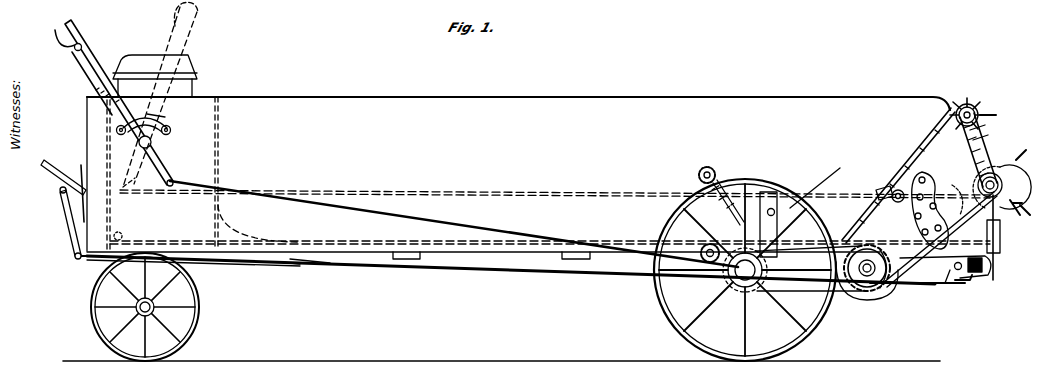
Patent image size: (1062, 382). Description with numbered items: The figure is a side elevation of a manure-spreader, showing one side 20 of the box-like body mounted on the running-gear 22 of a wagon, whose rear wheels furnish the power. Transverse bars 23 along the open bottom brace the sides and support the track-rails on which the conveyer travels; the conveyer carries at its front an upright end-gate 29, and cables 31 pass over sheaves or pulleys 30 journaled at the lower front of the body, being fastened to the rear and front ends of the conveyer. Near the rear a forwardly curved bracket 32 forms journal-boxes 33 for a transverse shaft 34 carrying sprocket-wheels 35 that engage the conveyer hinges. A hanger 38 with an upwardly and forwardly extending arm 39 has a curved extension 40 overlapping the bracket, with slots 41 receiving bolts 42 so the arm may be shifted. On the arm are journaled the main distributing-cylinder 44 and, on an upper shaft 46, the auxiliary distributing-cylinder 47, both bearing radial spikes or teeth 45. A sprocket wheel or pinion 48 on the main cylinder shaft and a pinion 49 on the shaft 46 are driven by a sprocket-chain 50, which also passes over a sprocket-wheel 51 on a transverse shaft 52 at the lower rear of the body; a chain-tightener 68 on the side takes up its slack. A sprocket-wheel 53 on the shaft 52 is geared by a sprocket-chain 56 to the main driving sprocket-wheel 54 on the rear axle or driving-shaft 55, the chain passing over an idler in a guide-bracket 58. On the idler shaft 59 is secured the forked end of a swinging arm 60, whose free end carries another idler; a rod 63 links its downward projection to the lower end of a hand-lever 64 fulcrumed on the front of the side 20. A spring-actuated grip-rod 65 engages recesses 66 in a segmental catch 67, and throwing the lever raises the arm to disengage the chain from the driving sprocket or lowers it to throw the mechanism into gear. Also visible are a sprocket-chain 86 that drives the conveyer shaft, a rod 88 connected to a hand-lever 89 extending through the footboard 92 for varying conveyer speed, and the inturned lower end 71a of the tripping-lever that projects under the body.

The side of the bed or body 20 is at (534, 190).
The running-gear 22 is at (190, 332).
The transverse bars 23 is at (406, 258).
The end-gate 29 is at (222, 134).
The sheaves or pulleys 30 is at (114, 240).
The cables 31 is at (518, 278).
The bracket 32 is at (918, 215).
The journal-boxes 33 is at (970, 282).
The transverse shaft 34 is at (986, 262).
The sprocket-wheel 35 is at (984, 272).
The hanger 38 is at (1000, 231).
The arm 39 is at (970, 154).
The extension 40 is at (932, 228).
The slots 41 is at (955, 195).
The bolts 42 is at (922, 198).
The main distributing-cylinder 44 is at (1008, 166).
The radial spikes or teeth 45 is at (997, 116).
The shaft 46 is at (978, 112).
The auxiliary distributing-cylinder 47 is at (972, 106).
The sprocket wheel or pinion 48 is at (1004, 203).
The sprocket wheel or pinion 49 is at (982, 141).
The sprocket-chain 50 is at (946, 118).
The sprocket-wheel 51 is at (852, 296).
The transverse shaft 52 is at (870, 292).
The sprocket-wheel 53 is at (870, 272).
The main driving sprocket-wheel 54 is at (742, 285).
The rear axle or driving-shaft 55 is at (752, 280).
The sprocket-chain 56 is at (838, 242).
The guide-bracket 58 is at (792, 212).
The shaft 59 is at (772, 208).
The arm 60 is at (736, 228).
The rod 63 is at (380, 212).
The hand-lever 64 is at (163, 172).
The grip-rod 65 is at (112, 112).
The recesses 66 is at (160, 112).
The segmental catch 67 is at (170, 123).
The chain-tightener 68 is at (876, 194).
The inturned and rounded lower end 71a is at (300, 262).
The sprocket-chain 86 is at (958, 285).
The rod 88 is at (285, 264).
The hand-lever 89 is at (70, 240).
The footboard 92 is at (56, 175).